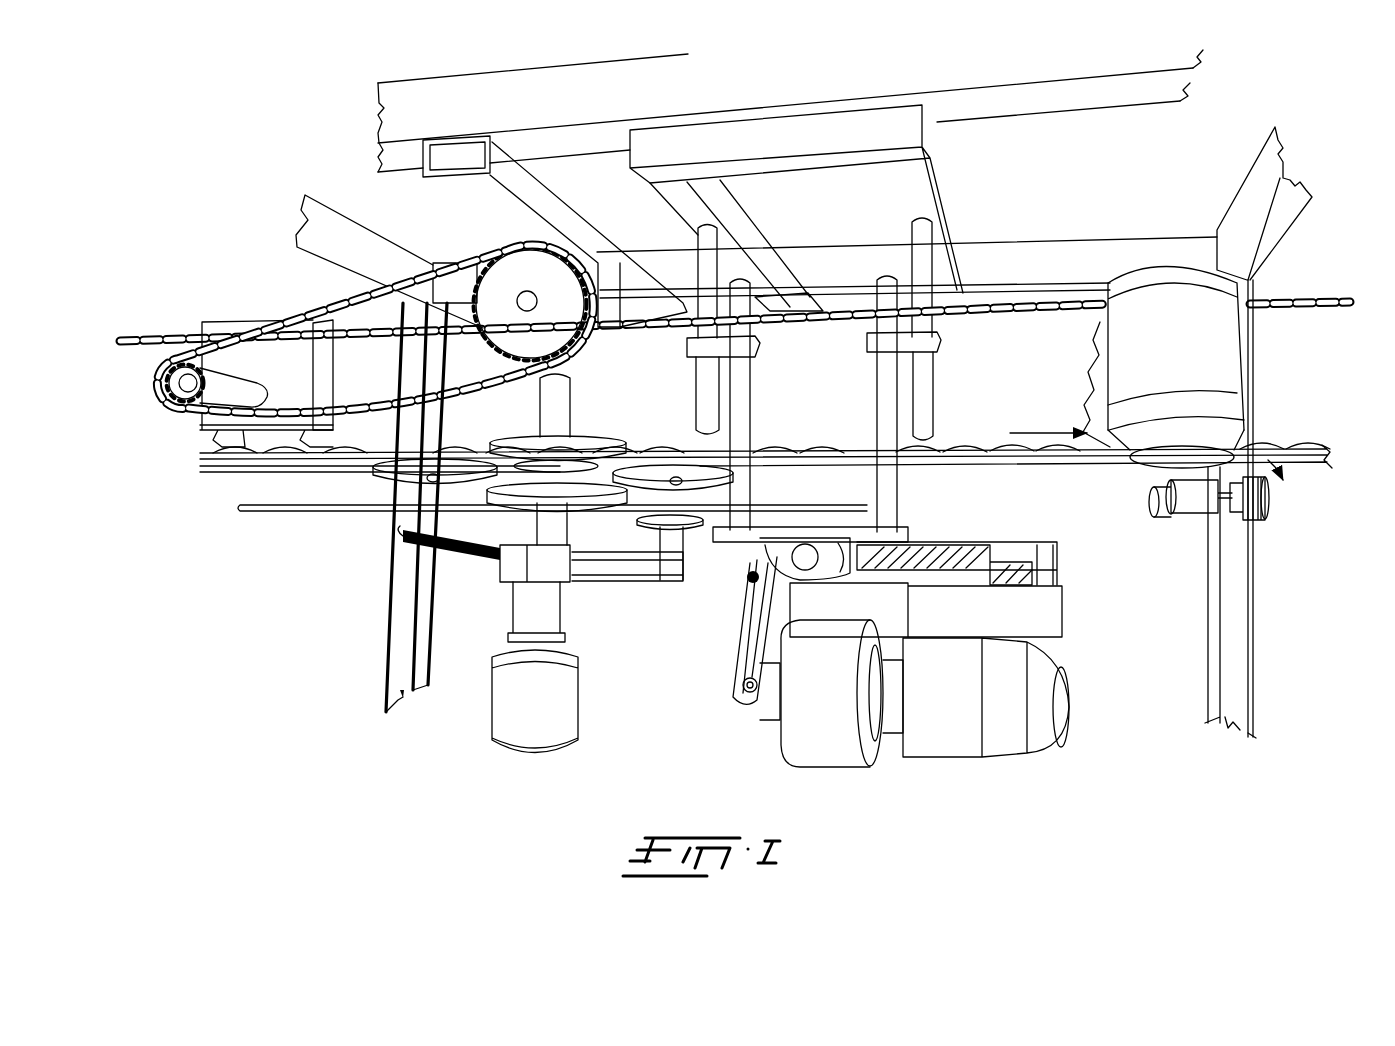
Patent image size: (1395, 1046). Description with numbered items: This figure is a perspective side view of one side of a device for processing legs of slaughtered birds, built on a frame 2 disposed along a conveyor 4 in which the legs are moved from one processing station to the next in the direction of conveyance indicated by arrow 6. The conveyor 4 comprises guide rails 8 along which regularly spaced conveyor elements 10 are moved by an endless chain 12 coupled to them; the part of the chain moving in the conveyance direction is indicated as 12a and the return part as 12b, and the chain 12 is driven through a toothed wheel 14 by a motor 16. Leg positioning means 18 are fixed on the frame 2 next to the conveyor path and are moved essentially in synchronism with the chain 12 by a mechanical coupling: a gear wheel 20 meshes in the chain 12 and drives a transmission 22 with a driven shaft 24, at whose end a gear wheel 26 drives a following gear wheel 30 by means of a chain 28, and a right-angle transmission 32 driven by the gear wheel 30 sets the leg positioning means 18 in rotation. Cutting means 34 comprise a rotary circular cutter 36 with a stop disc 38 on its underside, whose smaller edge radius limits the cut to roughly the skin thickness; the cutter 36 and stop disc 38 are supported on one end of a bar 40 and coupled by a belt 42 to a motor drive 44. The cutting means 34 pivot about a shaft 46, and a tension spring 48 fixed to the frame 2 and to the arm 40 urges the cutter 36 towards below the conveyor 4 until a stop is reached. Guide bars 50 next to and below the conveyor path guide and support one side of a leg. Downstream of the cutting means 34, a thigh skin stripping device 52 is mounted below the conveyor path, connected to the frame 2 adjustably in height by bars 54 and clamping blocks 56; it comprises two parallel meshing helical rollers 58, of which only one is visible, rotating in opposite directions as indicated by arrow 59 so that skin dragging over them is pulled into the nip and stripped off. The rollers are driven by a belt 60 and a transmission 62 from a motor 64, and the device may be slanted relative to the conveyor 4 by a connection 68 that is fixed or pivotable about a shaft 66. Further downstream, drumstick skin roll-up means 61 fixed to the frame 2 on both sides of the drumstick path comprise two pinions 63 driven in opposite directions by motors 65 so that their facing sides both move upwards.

The frame 2 is at (1097, 247).
The conveyor 4 is at (1098, 482).
The arrow indicating direction of conveyance 6 is at (1033, 430).
The guide rails 8 is at (1050, 466).
The conveyor elements 10 is at (777, 443).
The endless chain 12 is at (1267, 443).
The part of chain moving in conveyance direction 12a is at (950, 443).
The return part of chain 12b is at (1034, 316).
The toothed wheel 14 is at (1088, 333).
The motor 16 is at (1157, 307).
The leg positioning means 18 is at (613, 417).
The gear wheel 20 is at (210, 443).
The transmission 22 is at (223, 330).
The driven shaft 24 is at (237, 393).
The gear wheel 26 is at (168, 396).
The chain 28 is at (327, 330).
The gear wheel 30 is at (500, 283).
The right-angle transmission 32 is at (605, 283).
The cutting means 34 is at (597, 633).
The rotary circular cutter 36 is at (637, 521).
The stop disc 38 is at (690, 530).
The bar 40 is at (627, 575).
The belt 42 is at (597, 573).
The motor drive 44 is at (513, 682).
The shaft 46 is at (523, 615).
The tension spring 48 is at (432, 553).
The guide bars 50 is at (772, 508).
The thigh skin stripping device 52 is at (1085, 617).
The bars 54 is at (710, 263).
The clamping blocks 56 is at (865, 345).
The helical rollers 58 is at (917, 537).
The arrow indicating direction of rotation 59 is at (965, 513).
The belt 60 is at (742, 660).
The drumstick skin roll-up means 61 is at (1178, 540).
The transmission 62 is at (830, 755).
The pinions 63 is at (1268, 512).
The motor 64 is at (958, 740).
The motors 65 is at (1170, 517).
The shaft 66 is at (767, 580).
The connection 68 is at (747, 582).